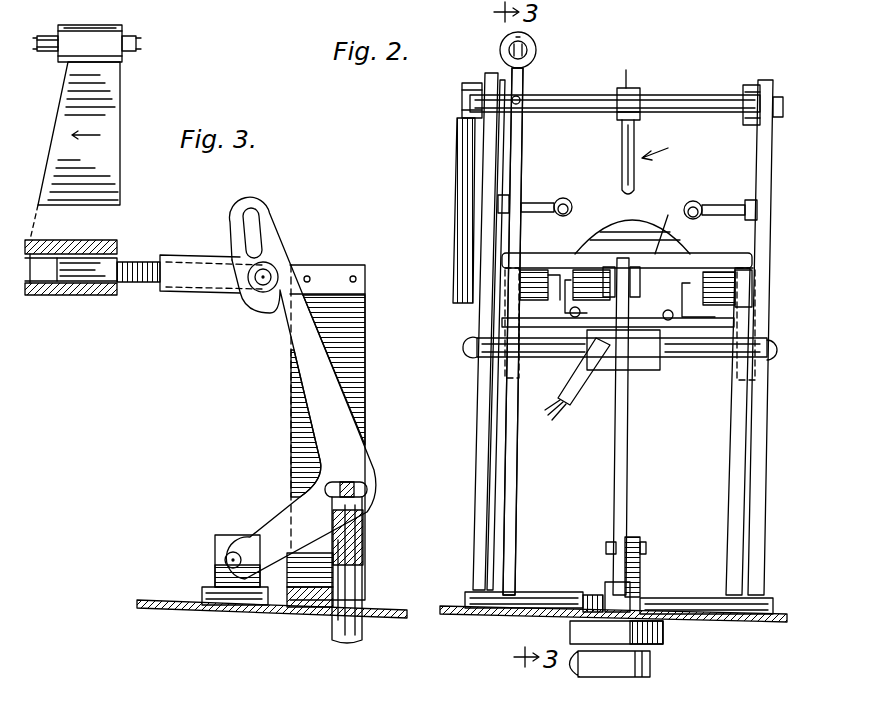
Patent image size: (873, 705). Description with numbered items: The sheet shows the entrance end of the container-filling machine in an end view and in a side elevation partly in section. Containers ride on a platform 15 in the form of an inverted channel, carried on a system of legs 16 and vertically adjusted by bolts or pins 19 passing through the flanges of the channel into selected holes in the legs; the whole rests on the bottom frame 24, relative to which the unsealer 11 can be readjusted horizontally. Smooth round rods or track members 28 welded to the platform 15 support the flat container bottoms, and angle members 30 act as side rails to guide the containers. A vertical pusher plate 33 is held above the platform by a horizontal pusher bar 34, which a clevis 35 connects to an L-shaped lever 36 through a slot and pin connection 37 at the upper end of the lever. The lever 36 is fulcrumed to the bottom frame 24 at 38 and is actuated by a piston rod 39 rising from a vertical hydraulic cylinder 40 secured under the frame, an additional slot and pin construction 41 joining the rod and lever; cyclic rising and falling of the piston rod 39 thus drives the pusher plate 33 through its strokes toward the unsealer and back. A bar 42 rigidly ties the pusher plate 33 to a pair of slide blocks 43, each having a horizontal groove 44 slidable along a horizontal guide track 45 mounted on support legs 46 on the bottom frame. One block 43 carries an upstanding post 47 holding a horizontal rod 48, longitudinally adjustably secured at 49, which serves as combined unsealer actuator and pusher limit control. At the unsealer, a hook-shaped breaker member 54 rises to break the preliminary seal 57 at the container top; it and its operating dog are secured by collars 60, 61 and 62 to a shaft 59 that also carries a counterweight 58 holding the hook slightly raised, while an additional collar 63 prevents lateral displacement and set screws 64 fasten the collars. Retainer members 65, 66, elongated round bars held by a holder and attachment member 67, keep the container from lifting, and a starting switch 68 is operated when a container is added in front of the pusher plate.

In FIG. 2, the unsealer 11 is at (671, 144).
In FIG. 2, the platform 15 is at (730, 380).
In FIG. 2, the support legs 16 is at (476, 500).
In FIG. 2, the bolt or pin 19 is at (530, 360).
In FIG. 3, the bottom frame 24 is at (165, 600).
In FIG. 2, the bottom frame 24 is at (520, 615).
In FIG. 2, the track members 28 is at (580, 312).
In FIG. 2, the angle members 30 is at (690, 268).
In FIG. 2, the pusher plate 33 is at (600, 240).
In FIG. 3, the pusher bar 34 is at (140, 262).
In FIG. 3, the clevis 35 is at (208, 255).
In FIG. 2, the clevis 35 is at (662, 219).
In FIG. 3, the L-shaped lever 36 is at (296, 398).
In FIG. 2, the L-shaped lever 36 is at (627, 468).
In FIG. 3, the slot and pin connection 37 is at (270, 230).
In FIG. 3, the fulcrum 38 is at (235, 552).
In FIG. 2, the fulcrum 38 is at (646, 552).
In FIG. 3, the piston rod 39 is at (362, 580).
In FIG. 2, the piston rod 39 is at (605, 585).
In FIG. 2, the hydraulic cylinder 40 is at (652, 665).
In FIG. 3, the slot and pin construction 41 is at (360, 482).
In FIG. 3, the bar 42 is at (100, 240).
In FIG. 2, the bar 42 is at (680, 253).
In FIG. 3, the slide blocks 43 is at (66, 297).
In FIG. 2, the slide blocks 43 is at (540, 268).
In FIG. 3, the horizontal groove 44 is at (52, 282).
In FIG. 3, the guide track 45 is at (212, 285).
In FIG. 3, the support legs 46 is at (362, 408).
In FIG. 2, the support legs 46 is at (519, 510).
In FIG. 3, the upstanding post 47 is at (120, 160).
In FIG. 2, the upstanding post 47 is at (522, 172).
In FIG. 3, the horizontal rod 48 is at (45, 55).
In FIG. 2, the horizontal rod 48 is at (527, 46).
In FIG. 3, the adjustable securement 49 is at (128, 55).
In FIG. 2, the adjustable securement 49 is at (536, 55).
In FIG. 2, the breaker member 54 is at (622, 160).
In FIG. 2, the preliminary seal 57 is at (719, 691).
In FIG. 2, the counterweight 58 is at (455, 222).
In FIG. 2, the shaft 59 is at (690, 95).
In FIG. 2, the collar 60 is at (462, 130).
In FIG. 2, the collar 61 is at (524, 112).
In FIG. 2, the collar 62 is at (640, 90).
In FIG. 2, the additional collar 63 is at (750, 125).
In FIG. 2, the set screws 64 is at (626, 70).
In FIG. 2, the retainer member 65 is at (572, 190).
In FIG. 2, the retainer member 66 is at (688, 200).
In FIG. 2, the holder and attachment member 67 is at (745, 203).
In FIG. 2, the starting switch 68 is at (660, 360).